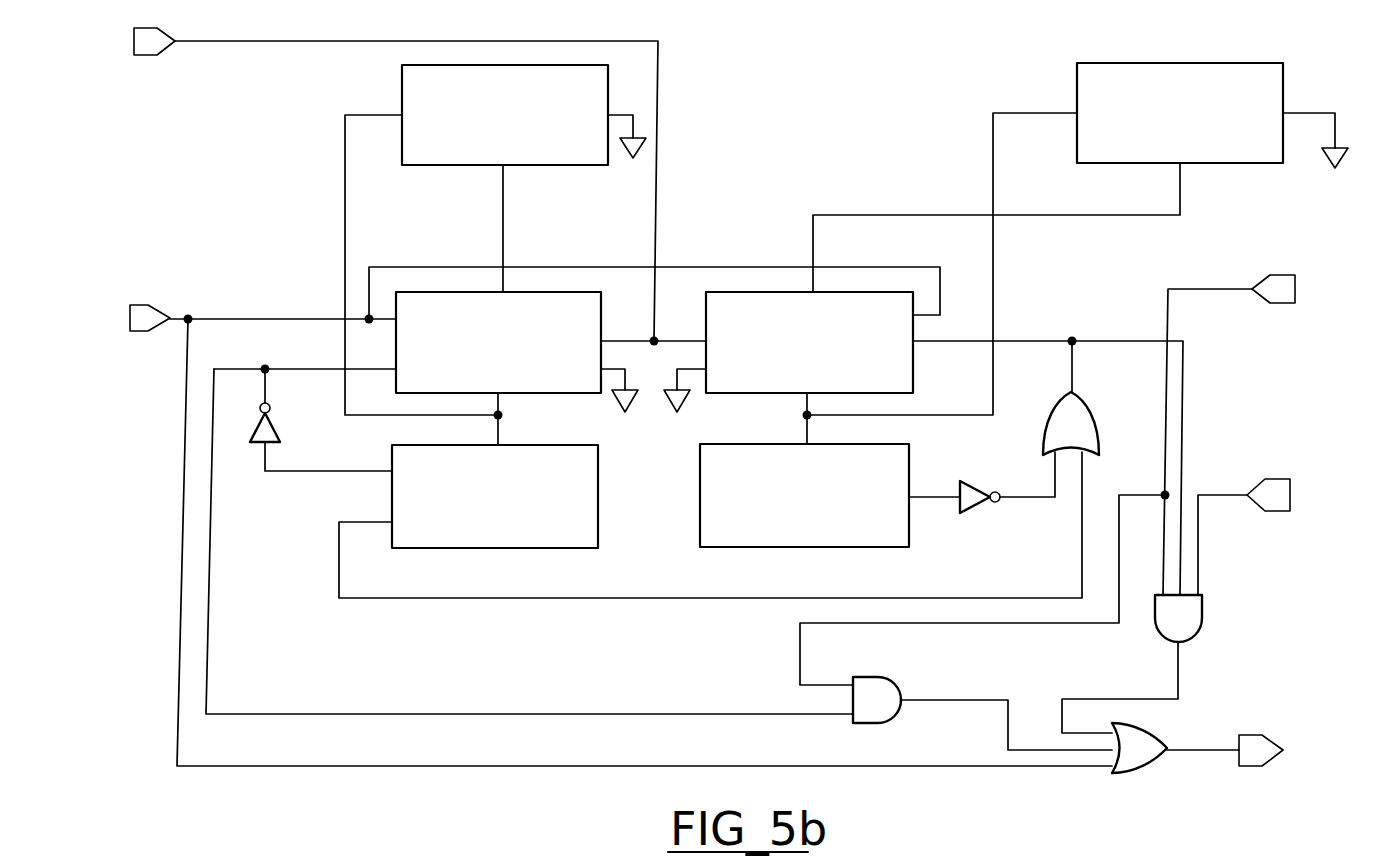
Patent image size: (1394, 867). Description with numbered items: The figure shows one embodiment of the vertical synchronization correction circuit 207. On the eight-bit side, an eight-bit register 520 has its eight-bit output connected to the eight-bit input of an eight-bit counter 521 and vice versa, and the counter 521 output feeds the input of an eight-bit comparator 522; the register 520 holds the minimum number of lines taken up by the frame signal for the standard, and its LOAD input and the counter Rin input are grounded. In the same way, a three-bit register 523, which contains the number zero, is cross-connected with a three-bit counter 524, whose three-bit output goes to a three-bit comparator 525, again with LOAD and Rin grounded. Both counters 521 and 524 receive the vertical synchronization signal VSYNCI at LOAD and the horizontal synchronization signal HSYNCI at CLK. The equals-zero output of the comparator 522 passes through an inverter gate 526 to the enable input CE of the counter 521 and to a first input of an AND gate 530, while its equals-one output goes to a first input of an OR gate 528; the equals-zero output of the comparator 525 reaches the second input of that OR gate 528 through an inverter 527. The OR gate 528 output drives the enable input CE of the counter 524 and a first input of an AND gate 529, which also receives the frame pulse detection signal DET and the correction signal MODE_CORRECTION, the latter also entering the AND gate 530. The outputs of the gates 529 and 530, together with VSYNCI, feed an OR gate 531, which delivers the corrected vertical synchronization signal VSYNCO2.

The correction circuit 207 is at (293, 208).
The eight-bit register 520 is at (402, 76).
The eight-bit counter 521 is at (545, 393).
The eight-bit comparator 522 is at (598, 497).
The three-bit register 523 is at (1165, 63).
The three-bit counter 524 is at (763, 393).
The three-bit comparator 525 is at (700, 506).
The inverter gate 526 is at (253, 430).
The inverter 527 is at (975, 513).
The OR gate 528 is at (1090, 410).
The AND gate 529 is at (1202, 607).
The AND gate 530 is at (895, 685).
The OR gate 531 is at (1148, 767).